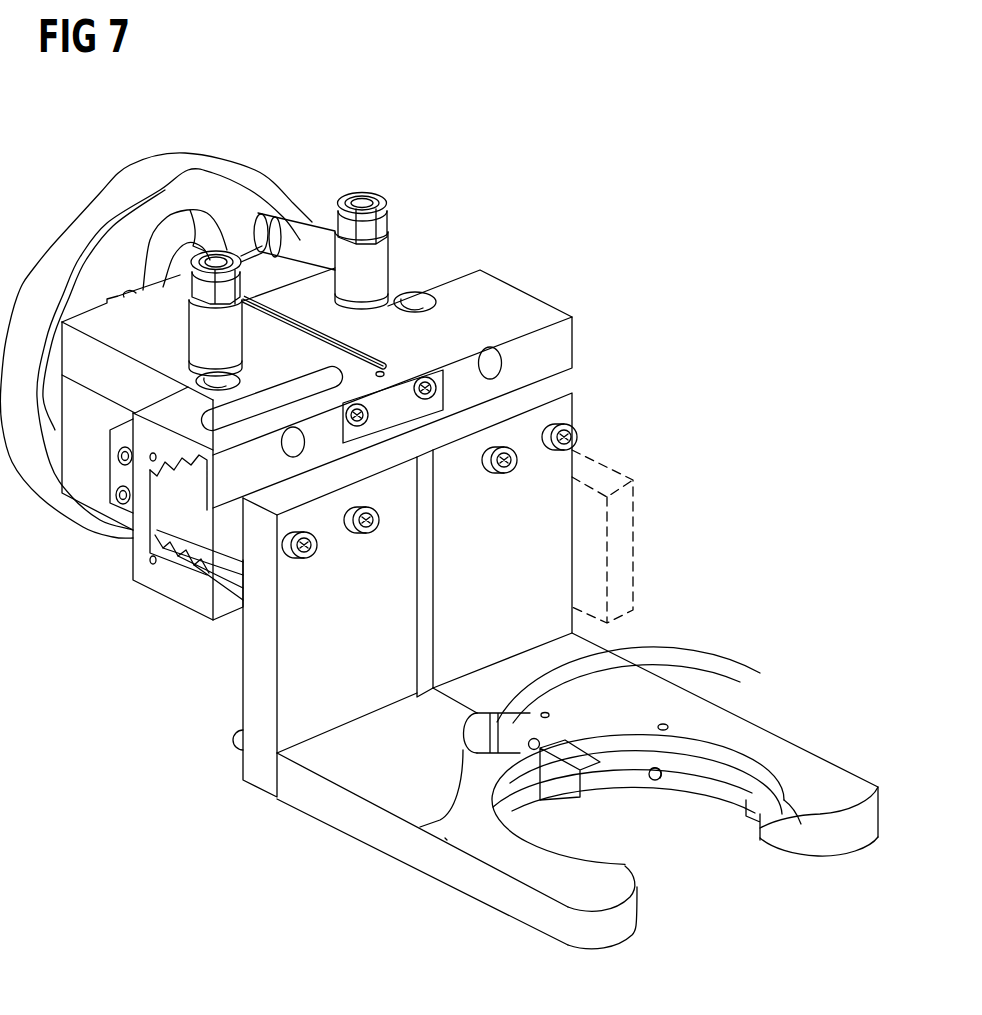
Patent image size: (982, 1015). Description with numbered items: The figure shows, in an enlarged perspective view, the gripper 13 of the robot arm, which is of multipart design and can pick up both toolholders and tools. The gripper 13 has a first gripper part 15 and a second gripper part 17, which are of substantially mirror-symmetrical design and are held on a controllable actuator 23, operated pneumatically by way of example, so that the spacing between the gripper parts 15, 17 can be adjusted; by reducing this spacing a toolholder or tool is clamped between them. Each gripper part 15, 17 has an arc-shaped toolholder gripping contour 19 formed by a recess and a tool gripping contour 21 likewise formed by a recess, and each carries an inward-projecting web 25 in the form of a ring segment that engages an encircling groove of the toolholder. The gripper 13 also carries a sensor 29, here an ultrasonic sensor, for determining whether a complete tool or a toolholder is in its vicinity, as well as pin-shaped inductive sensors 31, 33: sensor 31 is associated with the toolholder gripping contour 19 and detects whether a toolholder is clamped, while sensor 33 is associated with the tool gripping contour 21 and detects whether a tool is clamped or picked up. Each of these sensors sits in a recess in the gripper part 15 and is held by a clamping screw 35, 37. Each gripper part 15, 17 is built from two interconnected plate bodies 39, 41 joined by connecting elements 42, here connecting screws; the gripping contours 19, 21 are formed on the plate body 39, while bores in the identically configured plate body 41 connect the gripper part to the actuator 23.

The gripper 13 is at (212, 863).
The first gripper part 15 is at (763, 757).
The second gripper part 17 is at (497, 896).
The toolholder gripping contour 19 is at (568, 856).
The tool gripping contour 21 is at (648, 669).
The controllable actuator 23 is at (518, 307).
The inward-projecting web 25 is at (500, 812).
The sensor 29 is at (623, 507).
The sensor 31 is at (658, 781).
The sensor 33 is at (603, 648).
The clamping screw 35 is at (663, 726).
The clamping screw 37 is at (574, 736).
The plate body 39 is at (352, 813).
The plate body 41 is at (297, 593).
The connecting elements 42 is at (240, 740).